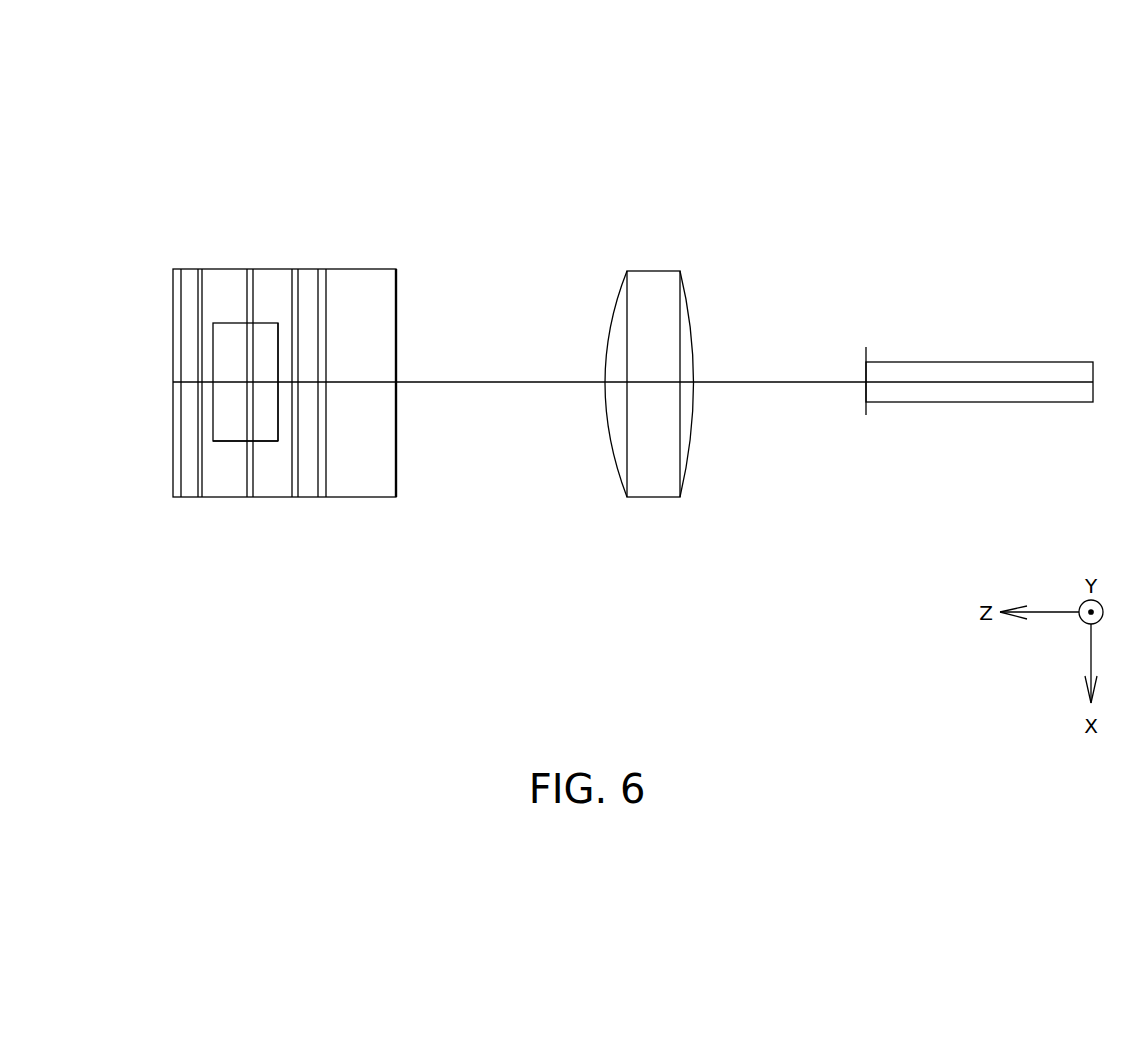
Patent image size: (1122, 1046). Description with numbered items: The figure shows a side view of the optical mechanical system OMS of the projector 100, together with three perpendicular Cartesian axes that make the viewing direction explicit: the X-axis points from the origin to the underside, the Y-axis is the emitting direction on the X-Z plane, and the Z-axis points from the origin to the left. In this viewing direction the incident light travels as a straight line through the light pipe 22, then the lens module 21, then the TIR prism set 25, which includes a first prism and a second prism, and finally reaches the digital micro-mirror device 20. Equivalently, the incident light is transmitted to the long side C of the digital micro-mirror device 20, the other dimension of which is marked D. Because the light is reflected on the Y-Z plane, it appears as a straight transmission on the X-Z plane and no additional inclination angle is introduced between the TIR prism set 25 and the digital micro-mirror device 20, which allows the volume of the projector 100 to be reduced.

The projector 100 is at (168, 138).
The optical mechanical system OMS is at (157, 215).
The TIR prism set 25 is at (173, 480).
The digital micro-mirror device 20 is at (227, 342).
The width of light emitting region D is at (228, 441).
The long side C is at (278, 428).
The lens module 21 is at (655, 478).
The light pipe 22 is at (978, 362).